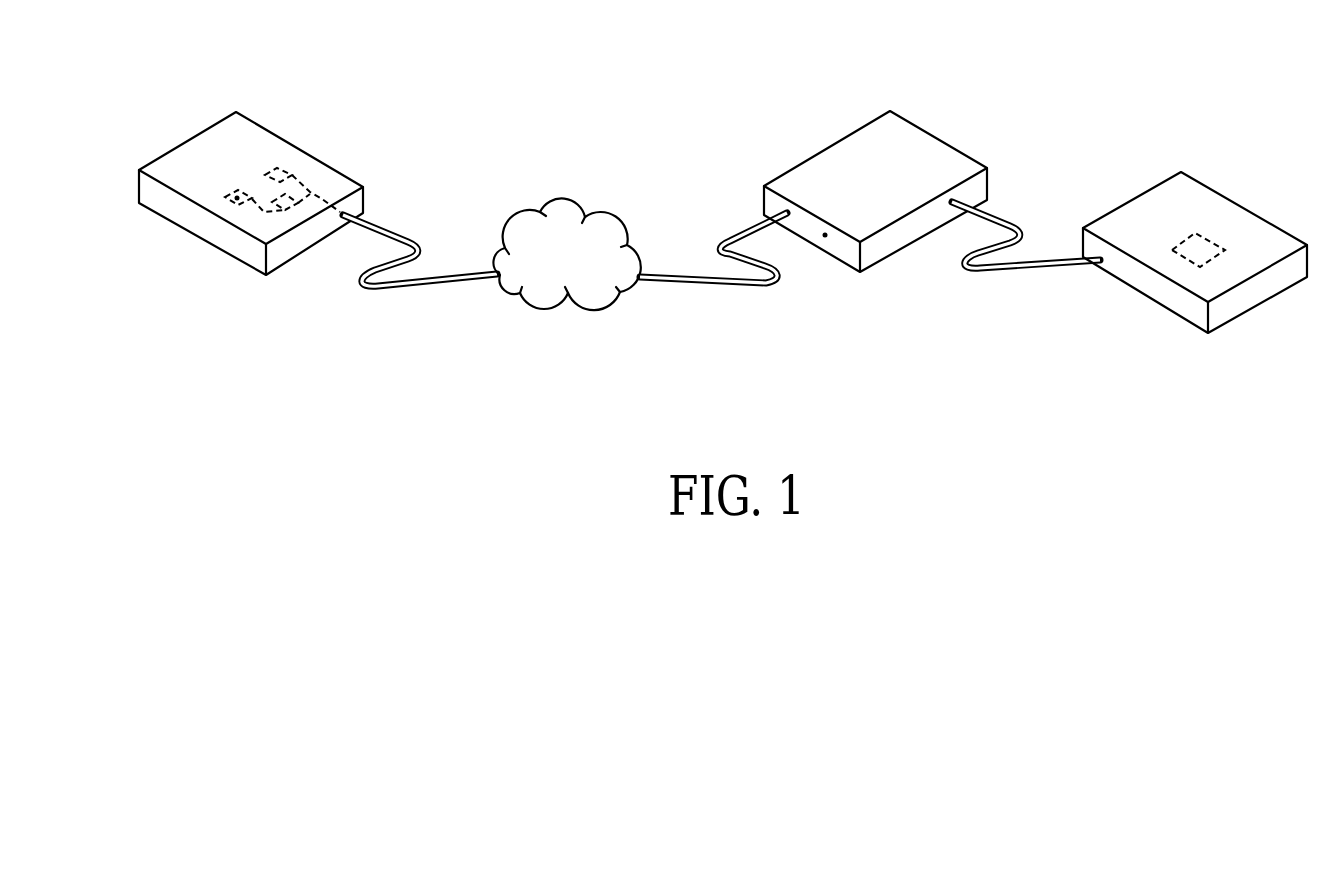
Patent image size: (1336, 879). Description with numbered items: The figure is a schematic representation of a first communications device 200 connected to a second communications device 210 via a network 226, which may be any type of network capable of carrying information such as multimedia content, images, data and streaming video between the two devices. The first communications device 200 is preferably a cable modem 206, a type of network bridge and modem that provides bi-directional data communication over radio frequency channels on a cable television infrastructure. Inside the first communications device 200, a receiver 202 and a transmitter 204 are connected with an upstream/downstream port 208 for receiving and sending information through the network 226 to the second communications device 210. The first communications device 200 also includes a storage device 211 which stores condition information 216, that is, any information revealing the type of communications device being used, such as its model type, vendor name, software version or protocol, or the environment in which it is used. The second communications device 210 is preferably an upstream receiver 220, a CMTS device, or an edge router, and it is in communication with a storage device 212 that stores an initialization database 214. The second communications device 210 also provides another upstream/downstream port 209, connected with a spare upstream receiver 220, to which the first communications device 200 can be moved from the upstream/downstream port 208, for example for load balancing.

The first communications device 200 is at (251, 164).
The cable modem 206 is at (193, 177).
The condition information 216 is at (237, 195).
The receiver 202 is at (280, 172).
The transmitter 204 is at (287, 202).
The storage device 211 is at (225, 196).
The network 226 is at (565, 215).
The upstream/downstream port 208 is at (788, 211).
The second communications device 210 is at (875, 148).
The upstream receiver 220 is at (907, 147).
The upstream/downstream port 209 is at (825, 237).
The storage device 212 is at (1155, 203).
The initialization database 214 is at (1210, 233).